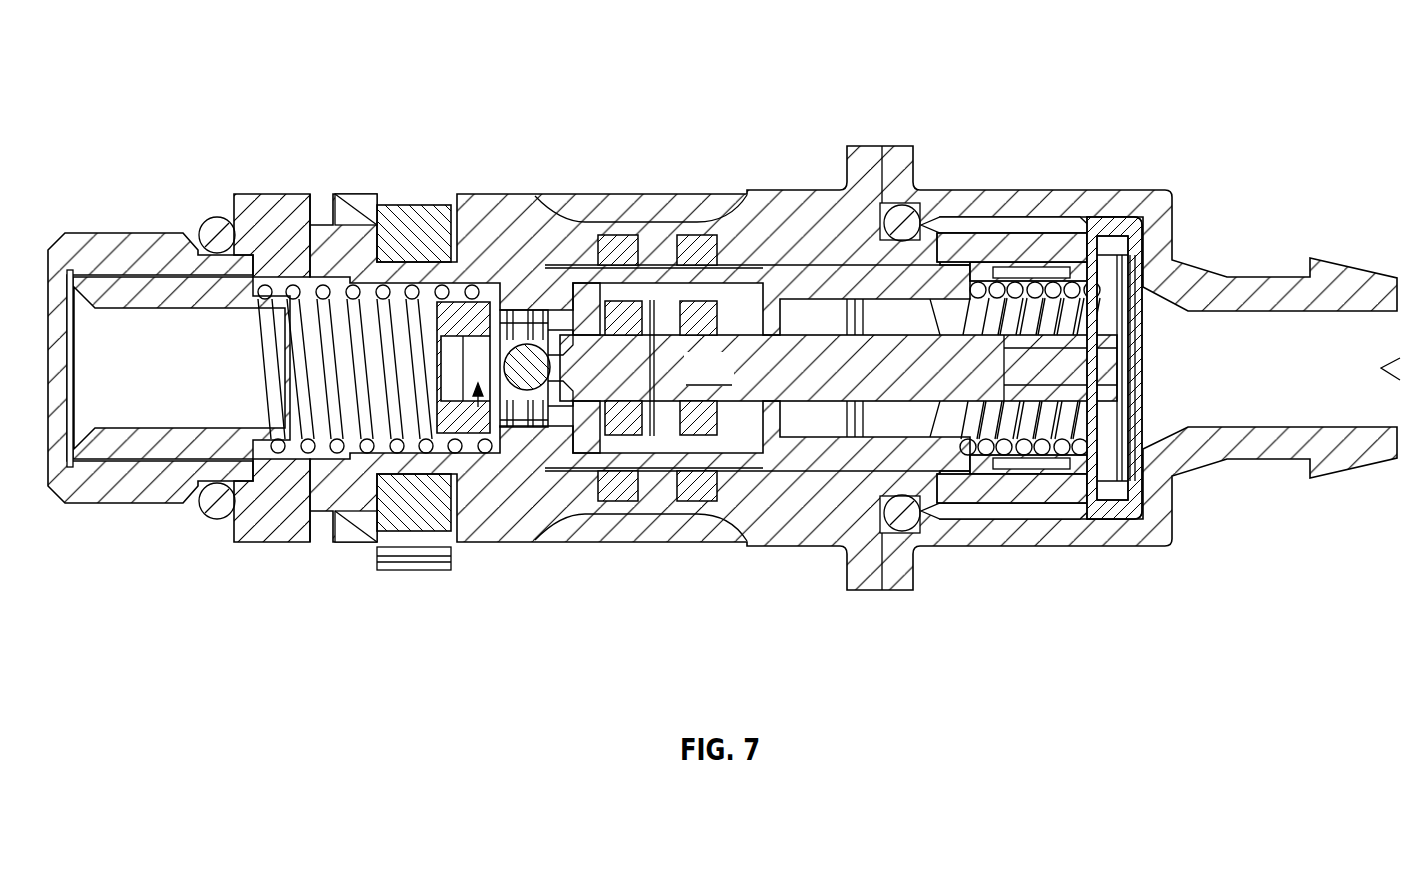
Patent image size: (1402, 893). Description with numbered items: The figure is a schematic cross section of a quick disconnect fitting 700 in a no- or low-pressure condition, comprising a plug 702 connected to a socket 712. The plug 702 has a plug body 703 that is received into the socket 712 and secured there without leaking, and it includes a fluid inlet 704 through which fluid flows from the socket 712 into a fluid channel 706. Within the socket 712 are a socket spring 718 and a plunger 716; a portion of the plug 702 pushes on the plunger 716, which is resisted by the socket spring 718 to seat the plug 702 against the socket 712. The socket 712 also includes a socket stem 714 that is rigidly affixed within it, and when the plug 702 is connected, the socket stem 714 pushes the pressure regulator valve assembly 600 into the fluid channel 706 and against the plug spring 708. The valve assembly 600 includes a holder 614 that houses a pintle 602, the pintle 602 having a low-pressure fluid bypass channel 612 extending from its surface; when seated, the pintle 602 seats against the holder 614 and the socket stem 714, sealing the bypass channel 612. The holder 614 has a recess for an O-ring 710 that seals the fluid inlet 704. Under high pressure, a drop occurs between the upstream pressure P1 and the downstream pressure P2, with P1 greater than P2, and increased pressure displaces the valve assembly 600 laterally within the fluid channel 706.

The quick disconnect fitting 700 is at (182, 76).
The plug 702 is at (307, 547).
The plug body 703 is at (285, 215).
The fluid inlet 704 is at (845, 427).
The fluid channel 706 is at (624, 430).
The plug spring 708 is at (307, 450).
The O-ring 710 is at (658, 463).
The socket 712 is at (882, 605).
The socket stem 714 is at (709, 369).
The plunger 716 is at (922, 465).
The socket spring 718 is at (1022, 447).
The pressure regulator valve assembly 600 is at (478, 407).
The pintle 602 is at (495, 370).
The low-pressure fluid bypass channel 612 is at (547, 413).
The holder 614 is at (533, 305).
The fluid pressure upstream of the valve assembly P1 is at (673, 294).
The fluid pressure downstream from the valve assembly P2 is at (413, 203).